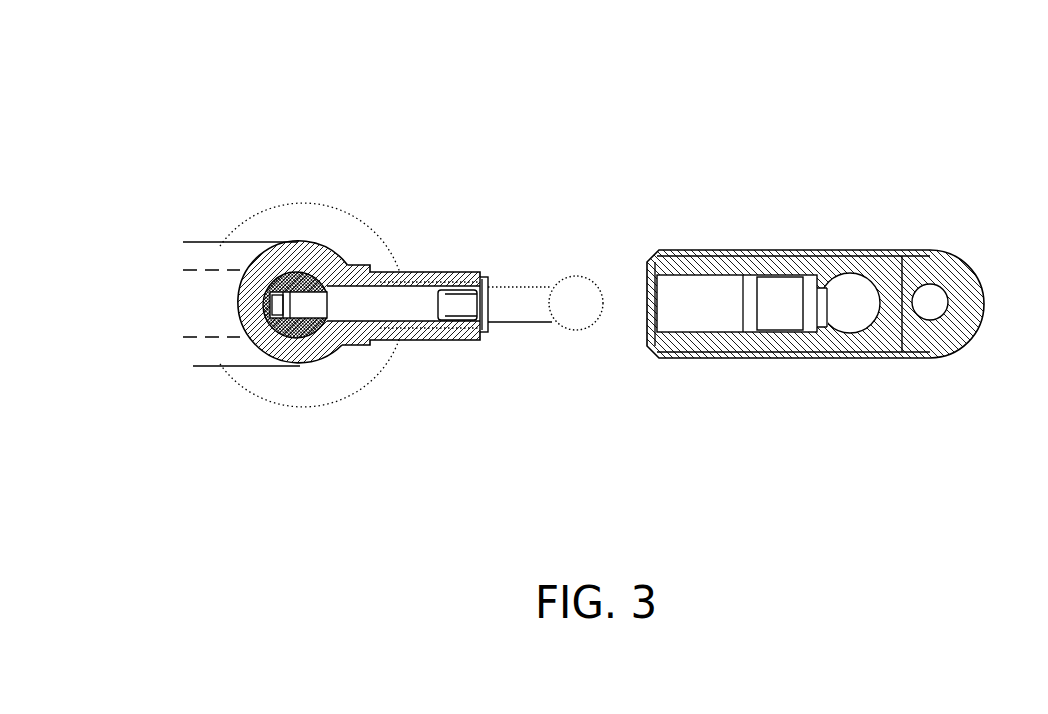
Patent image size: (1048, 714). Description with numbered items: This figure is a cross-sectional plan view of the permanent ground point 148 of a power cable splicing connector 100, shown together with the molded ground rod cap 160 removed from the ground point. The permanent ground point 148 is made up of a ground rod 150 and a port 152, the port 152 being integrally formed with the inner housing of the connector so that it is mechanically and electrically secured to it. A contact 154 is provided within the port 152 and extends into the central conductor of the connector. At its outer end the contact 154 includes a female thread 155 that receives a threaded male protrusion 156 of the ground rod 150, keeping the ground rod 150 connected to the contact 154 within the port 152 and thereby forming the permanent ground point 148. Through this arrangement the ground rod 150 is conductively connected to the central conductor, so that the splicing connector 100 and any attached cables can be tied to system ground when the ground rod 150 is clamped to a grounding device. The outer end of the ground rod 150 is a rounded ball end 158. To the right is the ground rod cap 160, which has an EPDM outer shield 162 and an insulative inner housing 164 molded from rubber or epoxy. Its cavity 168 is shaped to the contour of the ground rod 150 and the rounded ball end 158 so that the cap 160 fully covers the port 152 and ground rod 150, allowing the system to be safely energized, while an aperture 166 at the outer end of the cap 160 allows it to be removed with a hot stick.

The power cable splicing connector 100 is at (257, 117).
The permanent ground point 148 is at (518, 210).
The ground rod 150 is at (530, 302).
The port 152 is at (417, 282).
The contact 154 is at (300, 303).
The female thread 155 is at (450, 324).
The threaded male protrusion 156 is at (465, 305).
The rounded ball end 158 is at (573, 297).
The ground rod cap 160 is at (862, 177).
The EPDM outer shield 162 is at (890, 342).
The insulative inner housing 164 is at (722, 340).
The aperture 166 is at (928, 300).
The cavity 168 is at (712, 317).